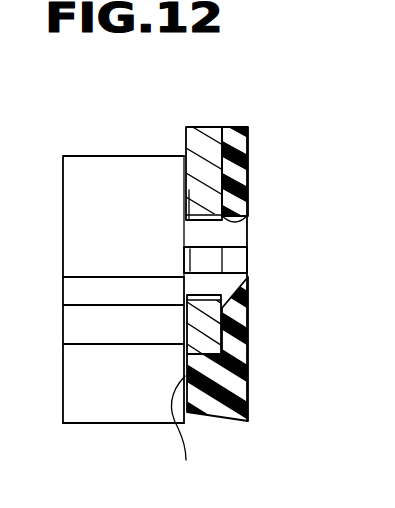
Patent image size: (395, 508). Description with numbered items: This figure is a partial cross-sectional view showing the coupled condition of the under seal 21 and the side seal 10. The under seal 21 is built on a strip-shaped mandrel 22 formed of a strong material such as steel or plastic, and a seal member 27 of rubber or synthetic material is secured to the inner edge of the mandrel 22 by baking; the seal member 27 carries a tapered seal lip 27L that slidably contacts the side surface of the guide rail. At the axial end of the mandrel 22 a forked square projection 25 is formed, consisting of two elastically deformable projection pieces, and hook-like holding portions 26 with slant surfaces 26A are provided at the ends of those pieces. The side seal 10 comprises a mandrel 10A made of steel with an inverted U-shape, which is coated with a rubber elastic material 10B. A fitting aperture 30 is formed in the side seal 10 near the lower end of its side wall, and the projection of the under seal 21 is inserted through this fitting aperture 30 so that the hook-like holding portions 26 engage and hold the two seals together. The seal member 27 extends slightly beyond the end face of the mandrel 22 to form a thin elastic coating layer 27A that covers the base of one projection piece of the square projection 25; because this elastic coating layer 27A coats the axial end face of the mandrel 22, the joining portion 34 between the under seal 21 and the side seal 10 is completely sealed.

The side seal 10 is at (256, 140).
The mandrel 10A is at (203, 132).
The rubber elastic material 10B is at (240, 130).
The under seal 21 is at (129, 148).
The mandrel 22 is at (78, 167).
The forked square projection 25 is at (236, 244).
The hook-like holding portion 26 is at (241, 222).
The slant surface 26A is at (232, 219).
The seal member 27 is at (95, 417).
The elastic coating layer 27A is at (231, 360).
The seal lip 27L is at (68, 425).
The fitting aperture 30 is at (244, 301).
The joining portion 34 is at (184, 436).